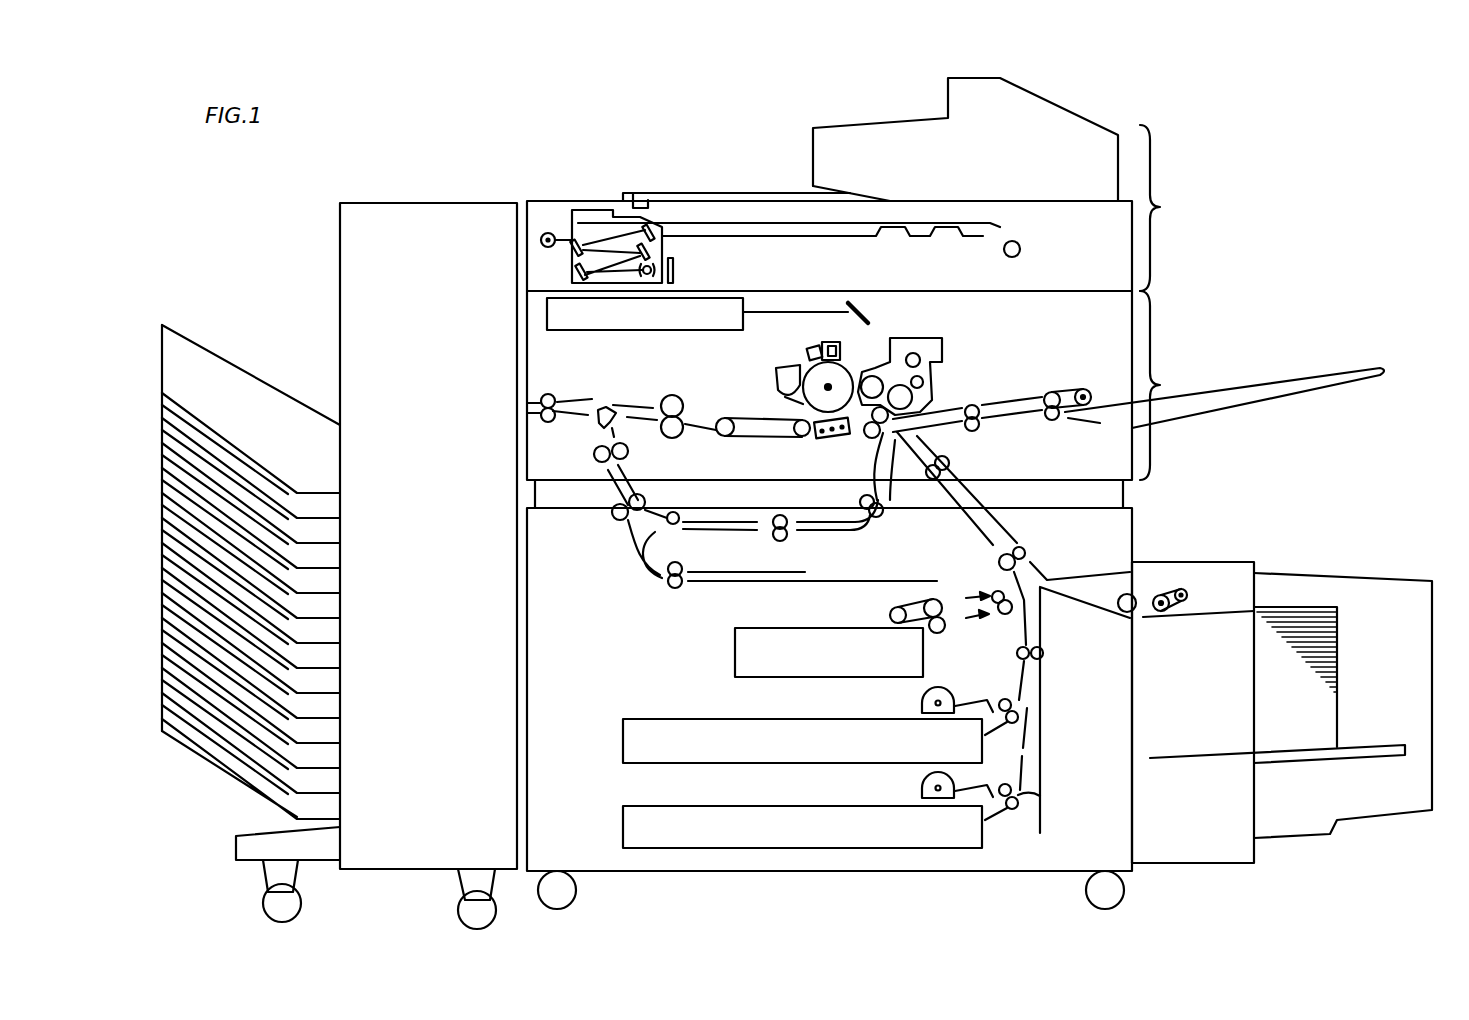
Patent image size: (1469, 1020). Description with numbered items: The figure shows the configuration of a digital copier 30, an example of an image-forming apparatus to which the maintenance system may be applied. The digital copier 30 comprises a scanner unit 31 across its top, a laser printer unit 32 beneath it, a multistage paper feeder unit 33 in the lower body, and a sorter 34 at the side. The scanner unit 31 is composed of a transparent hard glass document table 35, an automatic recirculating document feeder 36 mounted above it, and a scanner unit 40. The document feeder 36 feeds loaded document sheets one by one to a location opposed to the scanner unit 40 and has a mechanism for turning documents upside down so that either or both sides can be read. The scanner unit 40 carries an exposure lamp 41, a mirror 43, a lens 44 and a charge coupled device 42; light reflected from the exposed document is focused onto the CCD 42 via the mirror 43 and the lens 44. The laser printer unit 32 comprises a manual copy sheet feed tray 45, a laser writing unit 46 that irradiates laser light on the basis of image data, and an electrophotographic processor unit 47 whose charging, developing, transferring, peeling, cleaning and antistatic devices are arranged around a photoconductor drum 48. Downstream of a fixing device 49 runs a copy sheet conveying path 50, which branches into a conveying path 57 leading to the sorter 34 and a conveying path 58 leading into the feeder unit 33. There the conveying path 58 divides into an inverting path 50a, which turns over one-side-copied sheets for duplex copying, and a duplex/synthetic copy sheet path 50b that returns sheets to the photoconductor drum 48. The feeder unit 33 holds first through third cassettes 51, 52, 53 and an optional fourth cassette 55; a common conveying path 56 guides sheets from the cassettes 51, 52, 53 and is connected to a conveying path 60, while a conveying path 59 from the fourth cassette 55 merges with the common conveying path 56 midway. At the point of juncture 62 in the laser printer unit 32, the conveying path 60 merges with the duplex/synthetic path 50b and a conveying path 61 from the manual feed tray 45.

The digital copier 30 is at (1328, 250).
The scanner unit 31 is at (868, 208).
The laser printer unit 32 is at (1175, 385).
The multistage paper feeder unit 33 is at (503, 510).
The sorter 34 is at (453, 214).
The document table 35 is at (713, 192).
The automatic recirculating document feeder 36 is at (1100, 125).
The scanner unit 40 is at (546, 258).
The exposure lamp 41 is at (638, 207).
The charge coupled device 42 is at (670, 259).
The mirror 43 is at (558, 266).
The lens 44 is at (674, 284).
The manual copy sheet feed tray 45 is at (1303, 372).
The laser writing unit 46 is at (745, 308).
The electrophotographic processor unit 47 is at (990, 361).
The photoconductor drum 48 is at (853, 363).
The fixing device 49 is at (683, 395).
The copy sheet conveying path 50 is at (634, 403).
The inverting path 50a is at (757, 582).
The duplex/synthetic copy sheet path 50b is at (853, 530).
The first cassette 51 is at (743, 656).
The second cassette 52 is at (633, 735).
The third cassette 53 is at (633, 822).
The fourth cassette 55 is at (1252, 561).
The common conveying path 56 is at (1055, 691).
The conveying path 57 is at (573, 398).
The conveying path 58 is at (588, 440).
The conveying path 59 is at (1093, 571).
The conveying path 60 is at (1010, 535).
The conveying path 61 is at (1009, 421).
The point of juncture 62 is at (873, 450).